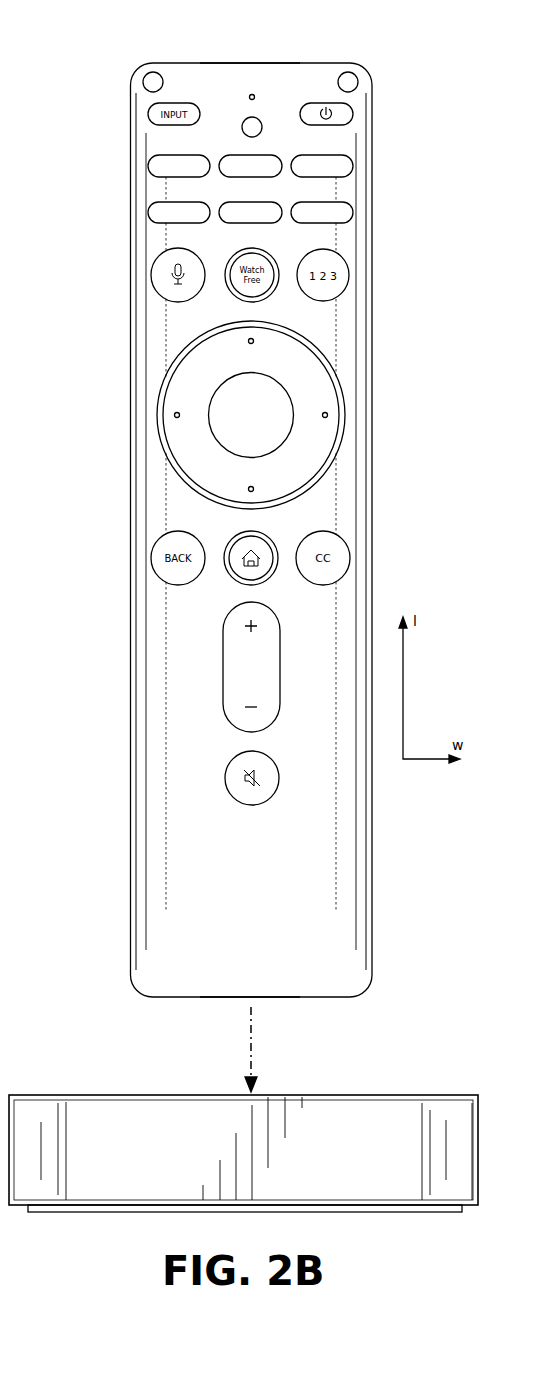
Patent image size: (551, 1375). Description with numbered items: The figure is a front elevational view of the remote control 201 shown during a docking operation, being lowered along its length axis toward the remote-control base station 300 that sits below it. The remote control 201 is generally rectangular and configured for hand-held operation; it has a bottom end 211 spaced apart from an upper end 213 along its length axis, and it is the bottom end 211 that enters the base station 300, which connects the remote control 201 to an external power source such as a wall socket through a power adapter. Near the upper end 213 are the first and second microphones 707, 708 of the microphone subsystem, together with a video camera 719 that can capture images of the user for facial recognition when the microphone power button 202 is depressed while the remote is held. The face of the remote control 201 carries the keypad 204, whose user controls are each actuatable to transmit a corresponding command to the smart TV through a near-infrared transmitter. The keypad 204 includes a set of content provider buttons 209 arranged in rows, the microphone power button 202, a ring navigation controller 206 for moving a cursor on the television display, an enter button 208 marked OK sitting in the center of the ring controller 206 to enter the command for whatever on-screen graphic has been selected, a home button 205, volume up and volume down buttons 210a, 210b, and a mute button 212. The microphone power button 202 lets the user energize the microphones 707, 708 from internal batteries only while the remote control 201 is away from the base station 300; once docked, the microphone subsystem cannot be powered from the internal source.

The remote control 201 is at (373, 266).
The microphone power button 202 is at (158, 278).
The keypad 204 is at (177, 312).
The home button 205 is at (235, 570).
The ring navigation controller 206 is at (323, 385).
The OK button 208 is at (273, 433).
The content provider buttons 209 is at (152, 175).
The volume up button 210a is at (255, 627).
The volume down button 210b is at (252, 708).
The bottom end 211 is at (180, 997).
The mute button 212 is at (233, 782).
The upper end 213 is at (293, 62).
The remote-control base station 300 is at (398, 1097).
The first microphone 707 is at (153, 80).
The second microphone 708 is at (348, 80).
The video camera 719 is at (247, 122).